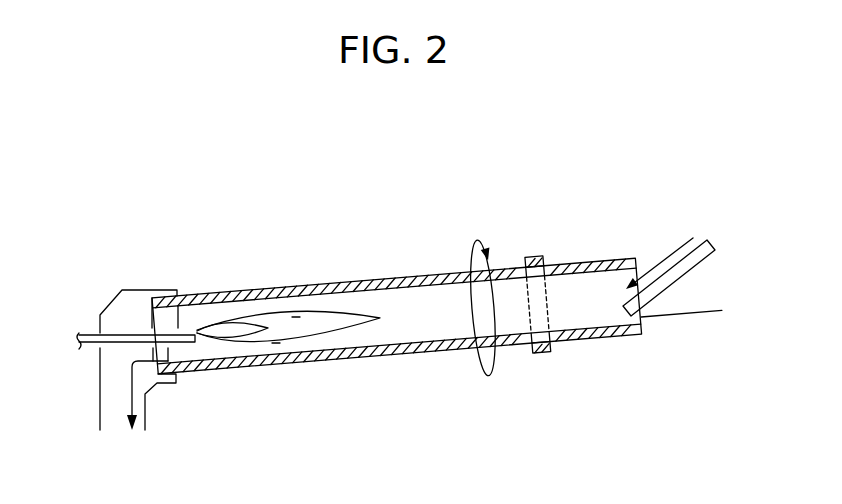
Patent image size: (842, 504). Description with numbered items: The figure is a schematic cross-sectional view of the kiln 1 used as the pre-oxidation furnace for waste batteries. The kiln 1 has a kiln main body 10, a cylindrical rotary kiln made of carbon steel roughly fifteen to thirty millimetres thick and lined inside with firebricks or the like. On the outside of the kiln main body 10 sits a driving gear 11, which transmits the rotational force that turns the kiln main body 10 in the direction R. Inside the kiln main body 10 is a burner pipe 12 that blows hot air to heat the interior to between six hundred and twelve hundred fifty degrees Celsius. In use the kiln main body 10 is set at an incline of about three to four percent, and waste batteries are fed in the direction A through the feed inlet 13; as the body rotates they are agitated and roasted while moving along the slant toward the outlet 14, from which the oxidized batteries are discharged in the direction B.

The kiln 1 is at (402, 212).
The kiln main body 10 is at (300, 283).
The driving gear 11 is at (537, 257).
The burner pipe 12 is at (181, 303).
The feed inlet 13 is at (633, 287).
The outlet 14 is at (152, 352).